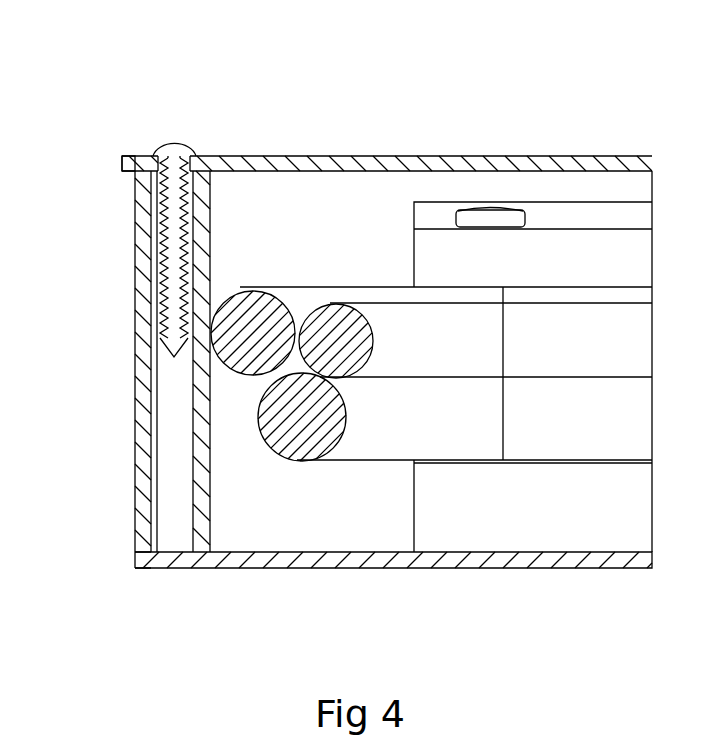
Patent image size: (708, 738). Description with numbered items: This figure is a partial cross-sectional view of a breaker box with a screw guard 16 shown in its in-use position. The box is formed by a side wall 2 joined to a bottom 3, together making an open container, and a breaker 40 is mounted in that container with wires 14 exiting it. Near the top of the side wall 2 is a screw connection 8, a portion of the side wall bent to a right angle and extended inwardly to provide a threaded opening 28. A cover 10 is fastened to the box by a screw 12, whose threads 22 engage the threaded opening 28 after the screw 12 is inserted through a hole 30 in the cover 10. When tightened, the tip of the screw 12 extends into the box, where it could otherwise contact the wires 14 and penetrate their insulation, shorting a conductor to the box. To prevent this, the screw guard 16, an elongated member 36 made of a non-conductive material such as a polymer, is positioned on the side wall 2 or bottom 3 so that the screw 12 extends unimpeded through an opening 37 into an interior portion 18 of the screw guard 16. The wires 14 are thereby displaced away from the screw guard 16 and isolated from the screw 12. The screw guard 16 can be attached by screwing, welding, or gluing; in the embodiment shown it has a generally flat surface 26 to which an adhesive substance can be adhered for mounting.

The side wall 2 is at (137, 343).
The bottom 3 is at (267, 568).
The screw connection 8 is at (207, 175).
The cover 10 is at (433, 163).
The screw 12 is at (185, 143).
The wires 14 is at (79, 505).
The screw guard 16 is at (210, 232).
The interior portion 18 is at (163, 380).
The threads 22 is at (135, 200).
The flat surface 26 is at (148, 535).
The threaded opening 28 is at (130, 167).
The hole 30 is at (166, 175).
The elongated member 36 is at (203, 508).
The opening 37 is at (197, 177).
The breaker 40 is at (563, 212).